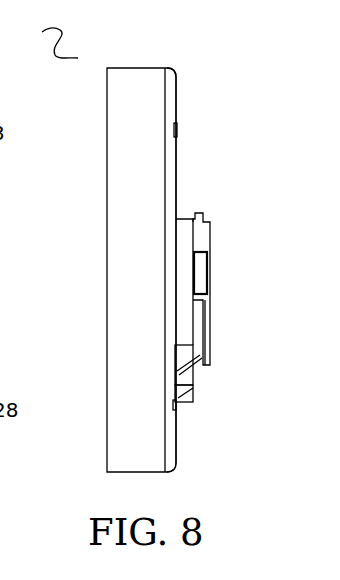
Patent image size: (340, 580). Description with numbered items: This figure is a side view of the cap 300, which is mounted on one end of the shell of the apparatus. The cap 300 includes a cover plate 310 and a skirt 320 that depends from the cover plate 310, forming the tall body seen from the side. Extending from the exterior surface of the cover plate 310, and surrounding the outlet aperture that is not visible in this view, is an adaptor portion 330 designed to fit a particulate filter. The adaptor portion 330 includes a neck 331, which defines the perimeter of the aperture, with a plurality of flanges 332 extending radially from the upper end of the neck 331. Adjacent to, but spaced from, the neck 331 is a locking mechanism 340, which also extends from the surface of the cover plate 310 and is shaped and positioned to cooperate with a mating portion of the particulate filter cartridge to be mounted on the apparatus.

The cap 300 is at (39, 38).
The cover plate 310 is at (177, 107).
The skirt 320 is at (132, 78).
The adaptor portion 330 is at (198, 219).
The neck 331 is at (183, 226).
The flanges 332 is at (209, 228).
The locking mechanism 340 is at (193, 378).